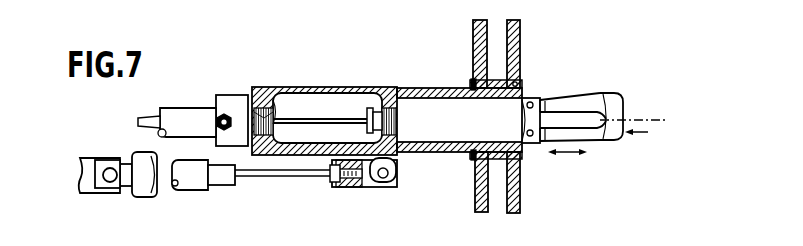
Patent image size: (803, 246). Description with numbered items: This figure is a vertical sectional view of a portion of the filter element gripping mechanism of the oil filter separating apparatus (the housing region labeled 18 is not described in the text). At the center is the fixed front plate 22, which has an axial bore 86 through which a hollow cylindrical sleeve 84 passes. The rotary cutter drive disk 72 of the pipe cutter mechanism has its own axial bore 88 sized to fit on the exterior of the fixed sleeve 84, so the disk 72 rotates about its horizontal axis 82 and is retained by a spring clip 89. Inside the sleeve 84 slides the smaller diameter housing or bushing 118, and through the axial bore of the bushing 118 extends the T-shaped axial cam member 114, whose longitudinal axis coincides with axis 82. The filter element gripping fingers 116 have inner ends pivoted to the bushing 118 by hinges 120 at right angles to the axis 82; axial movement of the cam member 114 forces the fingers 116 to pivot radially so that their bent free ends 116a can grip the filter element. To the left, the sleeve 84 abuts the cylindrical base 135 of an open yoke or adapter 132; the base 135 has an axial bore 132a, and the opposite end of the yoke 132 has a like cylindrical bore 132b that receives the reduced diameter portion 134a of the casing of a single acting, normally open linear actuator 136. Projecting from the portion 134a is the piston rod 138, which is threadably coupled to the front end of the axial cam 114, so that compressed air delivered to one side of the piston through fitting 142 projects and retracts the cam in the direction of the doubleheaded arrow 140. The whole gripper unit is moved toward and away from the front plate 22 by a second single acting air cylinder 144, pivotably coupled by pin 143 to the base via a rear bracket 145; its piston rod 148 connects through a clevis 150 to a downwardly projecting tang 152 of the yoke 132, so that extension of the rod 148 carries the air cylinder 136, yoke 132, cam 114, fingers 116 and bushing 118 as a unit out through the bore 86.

The housing 18 is at (430, 4).
The fixed front plate 22 is at (518, 22).
The rotary cutter drive disk 72 is at (477, 32).
The horizontal axis 82 is at (653, 118).
The hollow cylindrical sleeve 84 is at (430, 88).
The axial bore 86 is at (519, 83).
The axial bore 88 is at (477, 172).
The spring clip 89 is at (472, 85).
The axial cam member 114 is at (647, 134).
The filter element gripping fingers 116 is at (576, 96).
The bent free ends 116a is at (603, 93).
The housing or bushing 118 is at (527, 144).
The hinges 120 is at (533, 102).
The open yoke or adapter 132 is at (352, 86).
The axial bore 132a is at (399, 114).
The cylindrical bore 132b is at (258, 88).
The reduced diameter portion 134a is at (284, 102).
The cylindrical base 135 is at (393, 86).
The linear actuator 136 is at (224, 90).
The piston rod 138 is at (323, 118).
The doubleheaded arrow 140 is at (568, 155).
The fitting 142 is at (216, 122).
The pin 143 is at (108, 168).
The air cylinder 144 is at (202, 196).
The rear bracket 145 is at (88, 165).
The piston rod 148 is at (302, 177).
The clevis 150 is at (372, 180).
The tang 152 is at (400, 172).